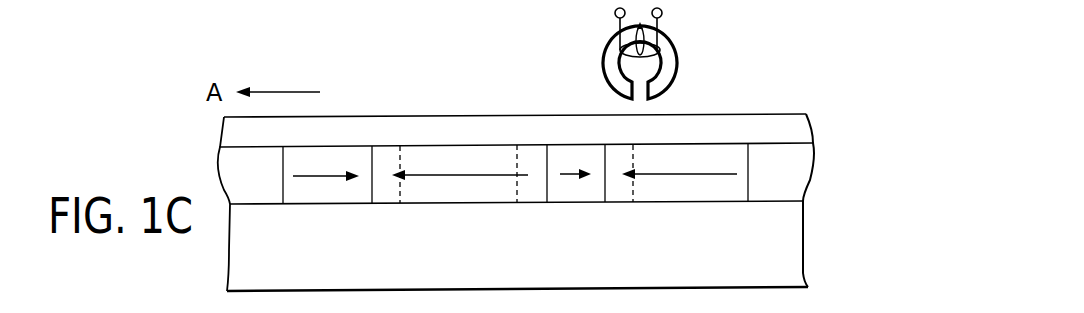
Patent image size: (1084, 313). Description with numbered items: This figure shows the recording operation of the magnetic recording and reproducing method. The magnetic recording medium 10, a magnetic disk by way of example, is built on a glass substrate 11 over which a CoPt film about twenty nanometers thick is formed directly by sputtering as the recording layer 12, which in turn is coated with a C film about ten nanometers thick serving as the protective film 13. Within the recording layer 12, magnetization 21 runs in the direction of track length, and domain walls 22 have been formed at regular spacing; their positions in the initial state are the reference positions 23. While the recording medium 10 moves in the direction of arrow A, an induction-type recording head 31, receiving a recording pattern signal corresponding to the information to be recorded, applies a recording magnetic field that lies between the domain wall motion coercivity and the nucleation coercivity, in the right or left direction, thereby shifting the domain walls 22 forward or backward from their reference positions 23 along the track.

The magnetic recording medium 10 is at (790, 105).
The glass substrate 11 is at (803, 242).
The recording layer 12 is at (803, 173).
The protective film 13 is at (803, 128).
The magnetization 21 is at (451, 175).
The domain walls 22 is at (546, 156).
The reference positions 23 is at (402, 162).
The recording head 31 is at (683, 62).